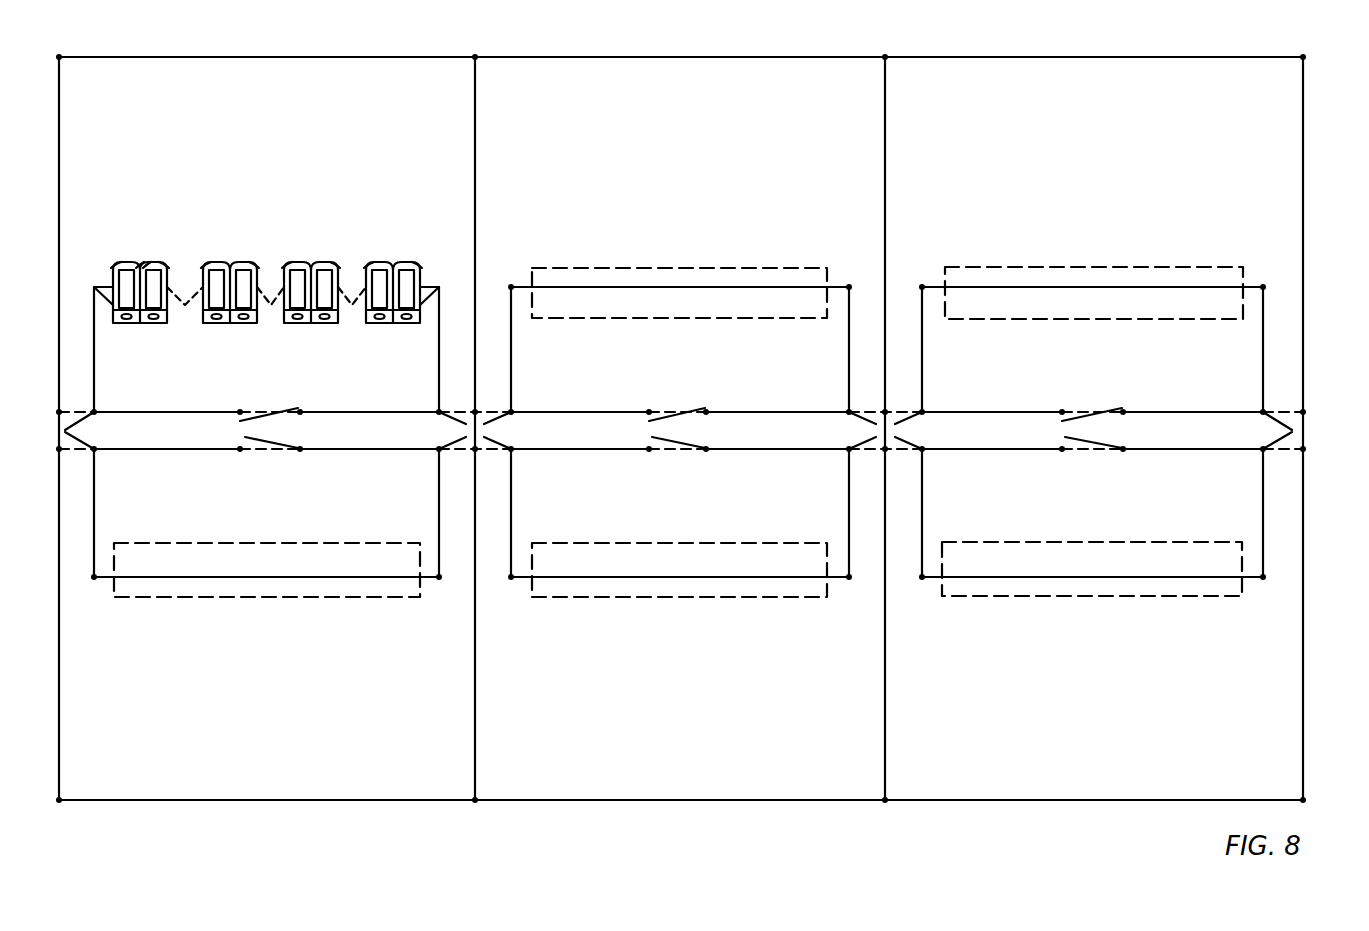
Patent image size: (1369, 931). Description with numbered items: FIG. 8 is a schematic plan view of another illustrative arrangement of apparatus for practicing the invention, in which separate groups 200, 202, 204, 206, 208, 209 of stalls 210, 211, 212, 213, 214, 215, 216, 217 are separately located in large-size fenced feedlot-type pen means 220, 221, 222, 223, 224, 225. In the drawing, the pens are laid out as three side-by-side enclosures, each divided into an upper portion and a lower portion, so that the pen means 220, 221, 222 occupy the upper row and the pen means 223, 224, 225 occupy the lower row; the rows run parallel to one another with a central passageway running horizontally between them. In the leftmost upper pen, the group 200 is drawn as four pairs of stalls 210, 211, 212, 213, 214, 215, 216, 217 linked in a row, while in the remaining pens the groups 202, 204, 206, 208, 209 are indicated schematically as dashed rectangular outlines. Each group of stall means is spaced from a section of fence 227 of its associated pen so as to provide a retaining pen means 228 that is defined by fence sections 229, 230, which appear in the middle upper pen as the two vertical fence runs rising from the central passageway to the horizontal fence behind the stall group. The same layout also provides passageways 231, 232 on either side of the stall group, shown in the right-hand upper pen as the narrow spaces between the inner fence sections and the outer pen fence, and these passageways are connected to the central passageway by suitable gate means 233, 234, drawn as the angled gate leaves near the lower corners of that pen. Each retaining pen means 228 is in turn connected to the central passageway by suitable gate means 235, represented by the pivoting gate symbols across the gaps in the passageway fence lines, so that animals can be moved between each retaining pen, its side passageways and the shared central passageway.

The group of stalls 200 is at (106, 244).
The group of stalls 202 is at (712, 266).
The group of stalls 204 is at (1130, 266).
The group of stalls 206 is at (262, 598).
The group of stalls 208 is at (656, 598).
The group of stalls 209 is at (1057, 598).
The stall 210 is at (128, 262).
The stall 211 is at (152, 324).
The stall 212 is at (212, 262).
The stall 213 is at (244, 324).
The stall 214 is at (294, 262).
The stall 215 is at (318, 324).
The stall 216 is at (378, 262).
The stall 217 is at (404, 324).
The pen means 220 is at (274, 62).
The pen means 221 is at (658, 64).
The pen means 222 is at (1098, 64).
The pen means 223 is at (262, 800).
The pen means 224 is at (640, 800).
The pen means 225 is at (1045, 795).
The section of fence 227 is at (586, 410).
The retaining pen means 228 is at (728, 377).
The fence section 229 is at (511, 286).
The fence section 230 is at (849, 287).
The passageway 231 is at (902, 366).
The passageway 232 is at (1279, 366).
The gate means 233 is at (912, 428).
The gate means 234 is at (1278, 426).
The gate means 235 is at (1085, 442).